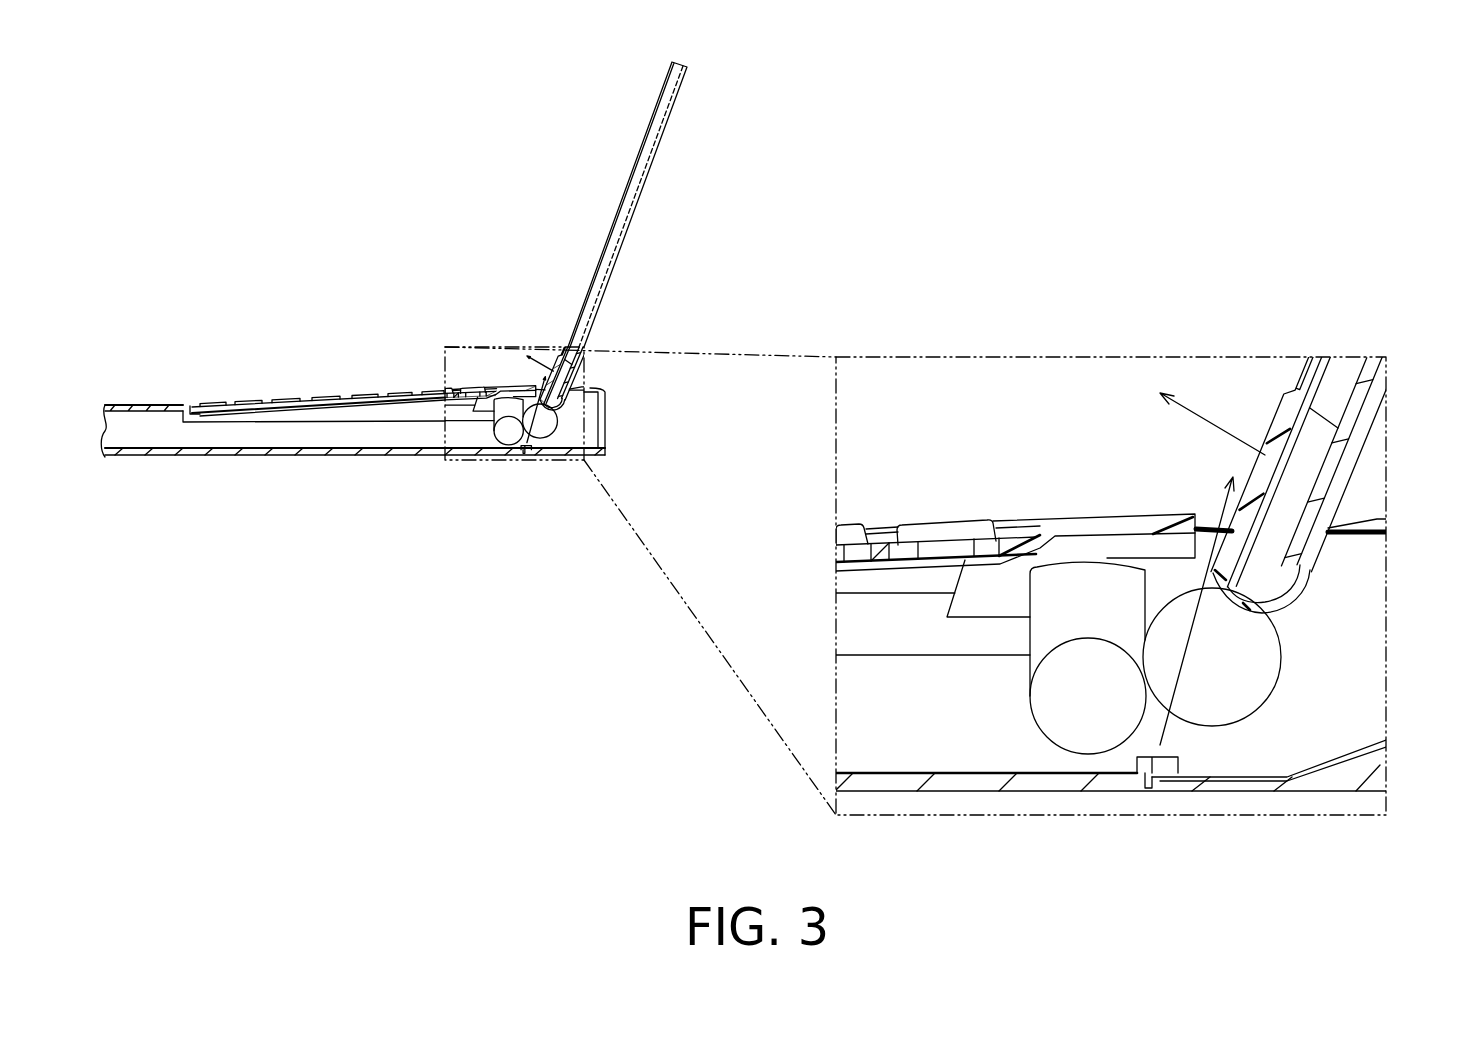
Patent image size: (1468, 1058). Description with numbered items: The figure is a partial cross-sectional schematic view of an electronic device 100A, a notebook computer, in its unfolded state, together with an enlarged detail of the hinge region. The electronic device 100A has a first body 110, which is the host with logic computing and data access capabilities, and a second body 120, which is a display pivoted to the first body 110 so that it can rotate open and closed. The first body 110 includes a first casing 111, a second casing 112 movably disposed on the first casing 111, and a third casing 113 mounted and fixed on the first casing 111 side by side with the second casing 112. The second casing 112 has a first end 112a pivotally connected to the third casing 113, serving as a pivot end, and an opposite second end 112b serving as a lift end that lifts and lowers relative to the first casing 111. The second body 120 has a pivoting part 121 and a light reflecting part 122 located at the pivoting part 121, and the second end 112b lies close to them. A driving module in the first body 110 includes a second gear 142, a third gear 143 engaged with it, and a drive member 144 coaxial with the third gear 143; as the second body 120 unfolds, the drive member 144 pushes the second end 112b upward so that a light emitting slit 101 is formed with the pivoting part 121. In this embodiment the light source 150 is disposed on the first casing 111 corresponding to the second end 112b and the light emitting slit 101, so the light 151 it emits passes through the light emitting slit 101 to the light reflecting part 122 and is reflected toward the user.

The electronic device 100A is at (157, 562).
The first body 110 is at (303, 497).
The first casing 111 is at (907, 785).
The second casing 112 is at (337, 395).
The first end 112a is at (200, 405).
The second end 112b is at (1140, 527).
The third casing 113 is at (138, 405).
The second body 120 is at (700, 173).
The pivoting part 121 is at (1277, 478).
The light reflecting part 122 is at (1288, 438).
The light emitting slit 101 is at (1197, 514).
The second gear 142 is at (1262, 673).
The third gear 143 is at (1085, 730).
The drive member 144 is at (1050, 588).
The light source 150 is at (1161, 758).
The light 151 is at (1195, 637).